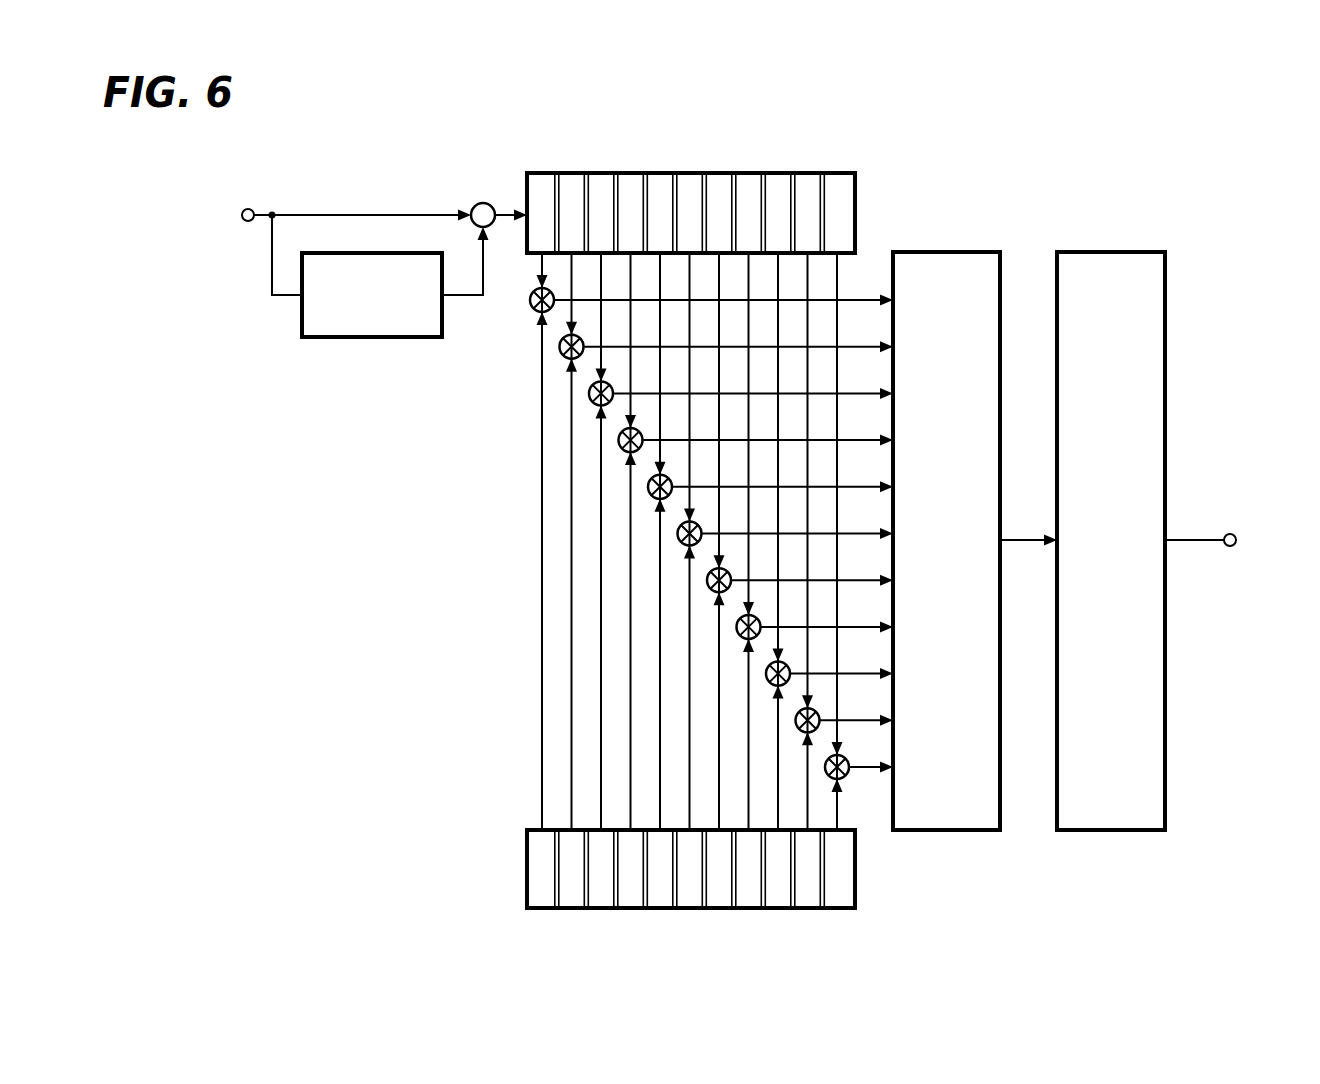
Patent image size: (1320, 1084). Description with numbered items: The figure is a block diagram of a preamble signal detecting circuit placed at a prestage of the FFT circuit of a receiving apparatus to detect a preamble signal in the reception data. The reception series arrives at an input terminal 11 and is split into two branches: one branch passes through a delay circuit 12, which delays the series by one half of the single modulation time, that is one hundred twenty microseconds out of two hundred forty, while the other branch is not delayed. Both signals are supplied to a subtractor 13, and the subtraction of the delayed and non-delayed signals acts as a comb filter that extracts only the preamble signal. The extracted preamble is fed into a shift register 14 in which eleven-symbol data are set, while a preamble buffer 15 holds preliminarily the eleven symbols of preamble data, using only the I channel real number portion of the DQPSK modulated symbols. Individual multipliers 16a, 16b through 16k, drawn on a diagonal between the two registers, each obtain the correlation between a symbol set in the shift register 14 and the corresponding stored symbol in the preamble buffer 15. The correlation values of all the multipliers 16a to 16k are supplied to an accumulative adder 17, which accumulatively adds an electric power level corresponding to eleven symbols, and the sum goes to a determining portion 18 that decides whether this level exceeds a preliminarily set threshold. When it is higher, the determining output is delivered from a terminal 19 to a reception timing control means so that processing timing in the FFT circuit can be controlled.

The input terminal 11 is at (248, 209).
The delay circuit 12 is at (368, 337).
The subtractor 13 is at (483, 203).
The shift register 14 is at (839, 173).
The preamble buffer 15 is at (527, 870).
The multiplier 16a is at (531, 309).
The multiplier 16b is at (560, 356).
The multiplier 16k is at (846, 777).
The accumulative adder 17 is at (948, 252).
The determining portion 18 is at (1109, 252).
The terminal 19 is at (1231, 533).